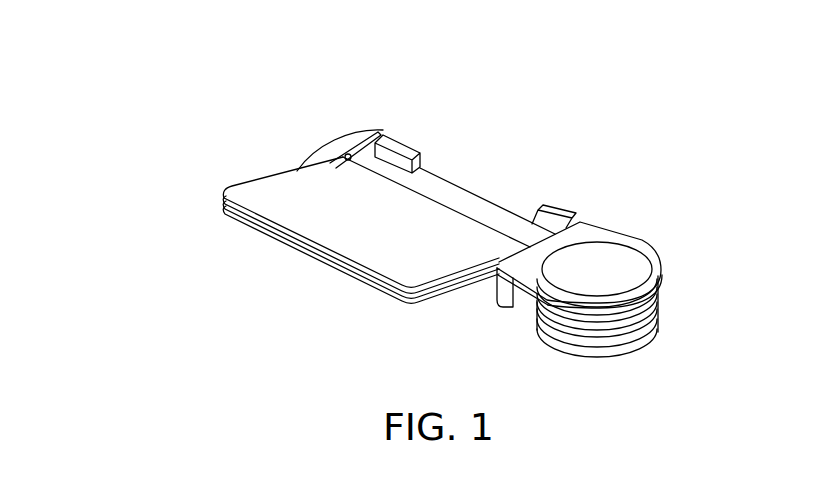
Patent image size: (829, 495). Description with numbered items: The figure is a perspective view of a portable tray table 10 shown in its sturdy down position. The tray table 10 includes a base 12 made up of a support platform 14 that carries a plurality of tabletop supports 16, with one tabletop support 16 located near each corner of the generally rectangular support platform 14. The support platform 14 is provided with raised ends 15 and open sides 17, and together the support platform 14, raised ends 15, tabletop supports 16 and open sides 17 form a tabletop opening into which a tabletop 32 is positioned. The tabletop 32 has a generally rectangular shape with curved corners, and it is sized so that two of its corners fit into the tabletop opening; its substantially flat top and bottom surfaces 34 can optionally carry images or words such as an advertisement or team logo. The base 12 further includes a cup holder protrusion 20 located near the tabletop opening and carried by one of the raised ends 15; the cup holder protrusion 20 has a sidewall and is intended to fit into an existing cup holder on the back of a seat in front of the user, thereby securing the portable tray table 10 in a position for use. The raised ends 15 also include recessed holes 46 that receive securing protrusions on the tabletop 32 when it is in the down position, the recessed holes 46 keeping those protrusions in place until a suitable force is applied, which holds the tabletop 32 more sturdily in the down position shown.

The portable tray table 10 is at (184, 126).
The base 12 is at (569, 210).
The support platform 14 is at (475, 152).
The raised ends 15 is at (380, 128).
The tabletop supports 16 is at (413, 150).
The open sides 17 is at (455, 178).
The cup holder protrusion 20 is at (646, 355).
The tabletop 32 is at (345, 174).
The top and bottom surfaces 34 is at (367, 212).
The recessed holes 46 is at (346, 154).